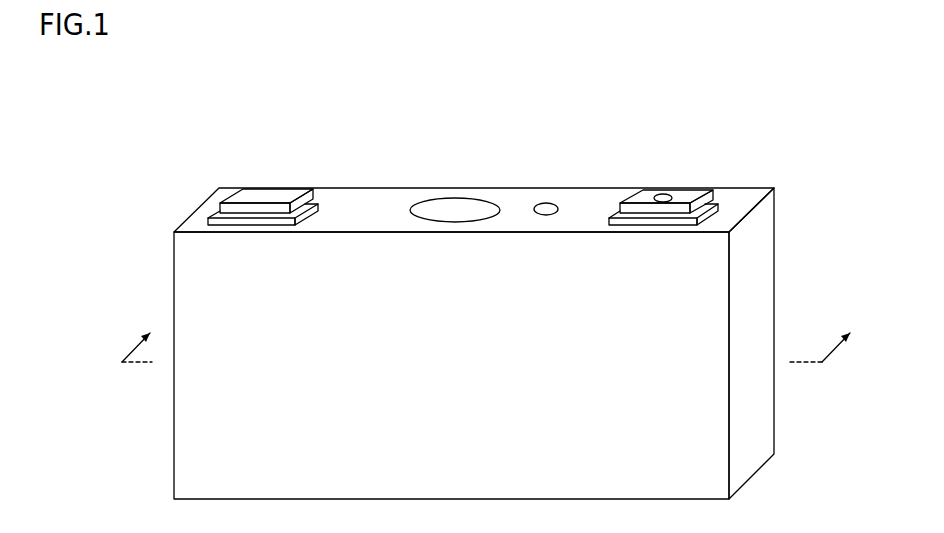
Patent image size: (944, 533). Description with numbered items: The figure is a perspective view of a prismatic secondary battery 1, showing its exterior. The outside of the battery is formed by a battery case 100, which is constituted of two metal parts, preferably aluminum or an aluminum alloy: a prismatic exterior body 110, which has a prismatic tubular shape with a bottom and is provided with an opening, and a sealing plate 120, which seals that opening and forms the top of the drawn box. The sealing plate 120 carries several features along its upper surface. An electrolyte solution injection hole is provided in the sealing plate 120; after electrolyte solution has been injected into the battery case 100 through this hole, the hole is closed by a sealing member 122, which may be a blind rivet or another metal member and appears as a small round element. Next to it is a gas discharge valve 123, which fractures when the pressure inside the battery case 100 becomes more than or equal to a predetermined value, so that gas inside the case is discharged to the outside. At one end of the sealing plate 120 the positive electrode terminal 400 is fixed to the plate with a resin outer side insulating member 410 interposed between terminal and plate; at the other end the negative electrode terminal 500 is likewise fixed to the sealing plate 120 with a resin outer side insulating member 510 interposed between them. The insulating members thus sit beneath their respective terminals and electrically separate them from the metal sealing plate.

The prismatic secondary battery 1 is at (205, 117).
The battery case 100 is at (827, 142).
The prismatic exterior body 110 is at (766, 232).
The sealing plate 120 is at (740, 195).
The sealing member 122 is at (546, 203).
The gas discharge valve 123 is at (450, 220).
The positive electrode terminal 400 is at (683, 195).
The outer side insulating member 410 is at (610, 218).
The negative electrode terminal 500 is at (283, 195).
The outer side insulating member 510 is at (210, 218).